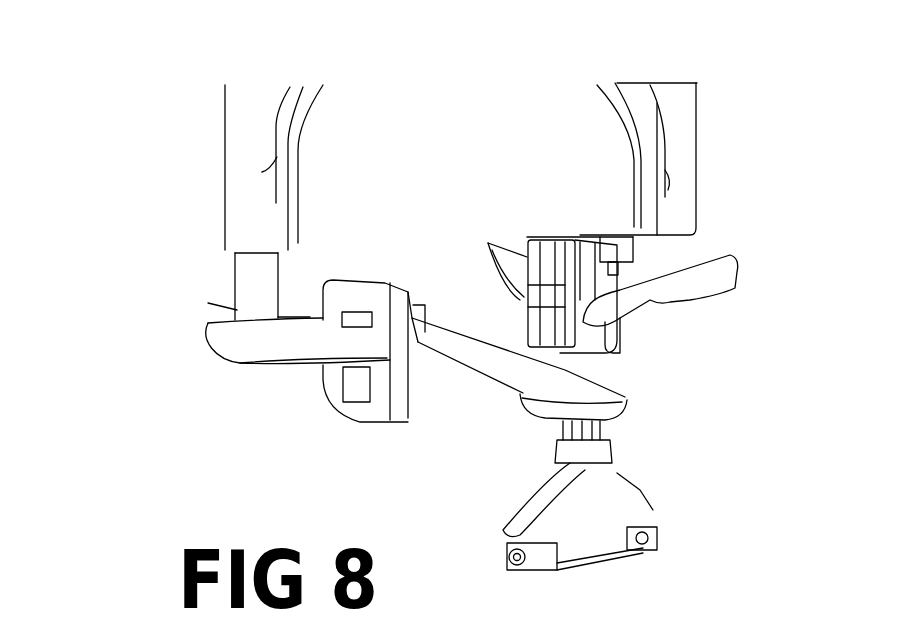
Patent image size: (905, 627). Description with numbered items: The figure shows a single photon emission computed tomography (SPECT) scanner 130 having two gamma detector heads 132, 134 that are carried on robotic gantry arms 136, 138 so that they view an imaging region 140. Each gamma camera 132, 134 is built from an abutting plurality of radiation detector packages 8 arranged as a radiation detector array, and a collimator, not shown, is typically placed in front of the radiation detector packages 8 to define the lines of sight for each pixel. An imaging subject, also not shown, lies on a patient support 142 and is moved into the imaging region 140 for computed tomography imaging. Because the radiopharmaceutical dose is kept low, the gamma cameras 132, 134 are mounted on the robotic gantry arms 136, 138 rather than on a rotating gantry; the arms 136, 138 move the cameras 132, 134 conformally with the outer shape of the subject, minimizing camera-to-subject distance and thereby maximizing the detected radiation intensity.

The single photon emission computed tomography (SPECT) scanner 130 is at (83, 80).
The gamma detector head 132 is at (363, 413).
The gamma detector head 134 is at (620, 353).
The robotic gantry arm 136 is at (247, 215).
The robotic gantry arm 138 is at (690, 157).
The imaging region 140 is at (426, 278).
The patient support 142 is at (495, 362).
The radiation detector package 8 is at (495, 254).